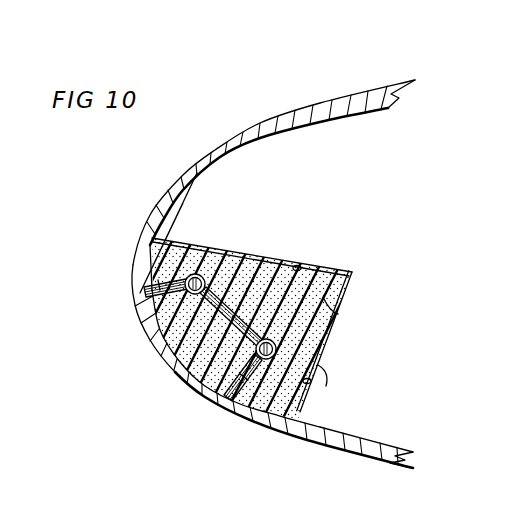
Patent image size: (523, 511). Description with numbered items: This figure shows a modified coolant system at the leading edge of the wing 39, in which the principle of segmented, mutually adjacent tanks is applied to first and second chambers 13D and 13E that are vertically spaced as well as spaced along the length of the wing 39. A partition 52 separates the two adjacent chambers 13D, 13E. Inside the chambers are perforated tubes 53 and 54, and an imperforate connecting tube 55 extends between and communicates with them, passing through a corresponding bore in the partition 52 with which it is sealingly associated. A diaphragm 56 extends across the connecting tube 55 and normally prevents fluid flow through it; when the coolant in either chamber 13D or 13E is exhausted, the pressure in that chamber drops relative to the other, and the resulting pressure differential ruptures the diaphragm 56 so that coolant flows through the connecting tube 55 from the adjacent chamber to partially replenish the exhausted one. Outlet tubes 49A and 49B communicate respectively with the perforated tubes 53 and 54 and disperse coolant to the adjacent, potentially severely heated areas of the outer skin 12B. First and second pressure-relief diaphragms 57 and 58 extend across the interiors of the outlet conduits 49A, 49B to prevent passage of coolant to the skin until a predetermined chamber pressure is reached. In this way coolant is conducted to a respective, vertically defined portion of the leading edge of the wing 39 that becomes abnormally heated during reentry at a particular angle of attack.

The outer skin 12B is at (262, 127).
The wing 39 is at (345, 97).
The first outlet tube 49A is at (163, 310).
The second outlet tube 49B is at (268, 412).
The partition 52 is at (335, 310).
The perforated tube 53 is at (198, 273).
The perforated tube 54 is at (277, 349).
The connecting tube 55 is at (232, 305).
The diaphragm 56 is at (266, 262).
The first pressure-relief diaphragm 57 is at (147, 303).
The second pressure-relief diaphragm 58 is at (229, 406).
The first chamber 13D is at (300, 267).
The second chamber 13E is at (312, 382).